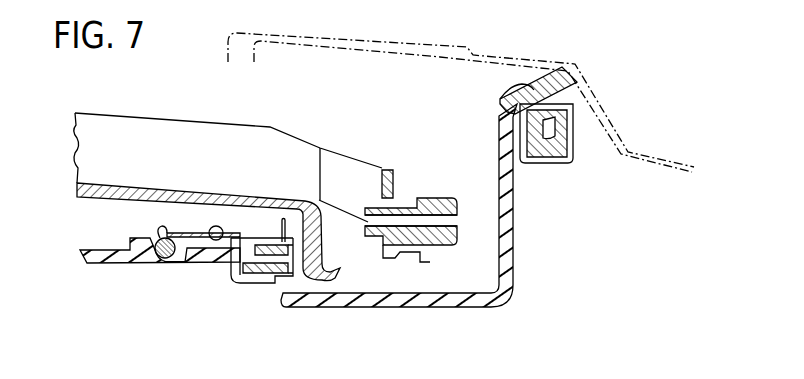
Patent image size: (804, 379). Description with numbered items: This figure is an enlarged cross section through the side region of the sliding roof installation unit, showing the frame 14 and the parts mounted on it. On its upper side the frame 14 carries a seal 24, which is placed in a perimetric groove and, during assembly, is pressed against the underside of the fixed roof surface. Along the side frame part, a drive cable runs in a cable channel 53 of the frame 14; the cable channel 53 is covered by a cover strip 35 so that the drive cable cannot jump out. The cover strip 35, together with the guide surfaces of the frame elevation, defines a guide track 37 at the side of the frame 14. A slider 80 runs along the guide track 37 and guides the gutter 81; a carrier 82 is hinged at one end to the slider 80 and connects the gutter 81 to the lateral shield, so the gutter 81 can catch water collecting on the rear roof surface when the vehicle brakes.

The frame 14 is at (512, 238).
The seal 24 is at (522, 86).
The cover strip 35 is at (214, 240).
The guide track 37 is at (248, 262).
The cable channel 53 is at (168, 258).
The slider 80 is at (280, 280).
The gutter 81 is at (136, 153).
The carrier 82 is at (437, 198).